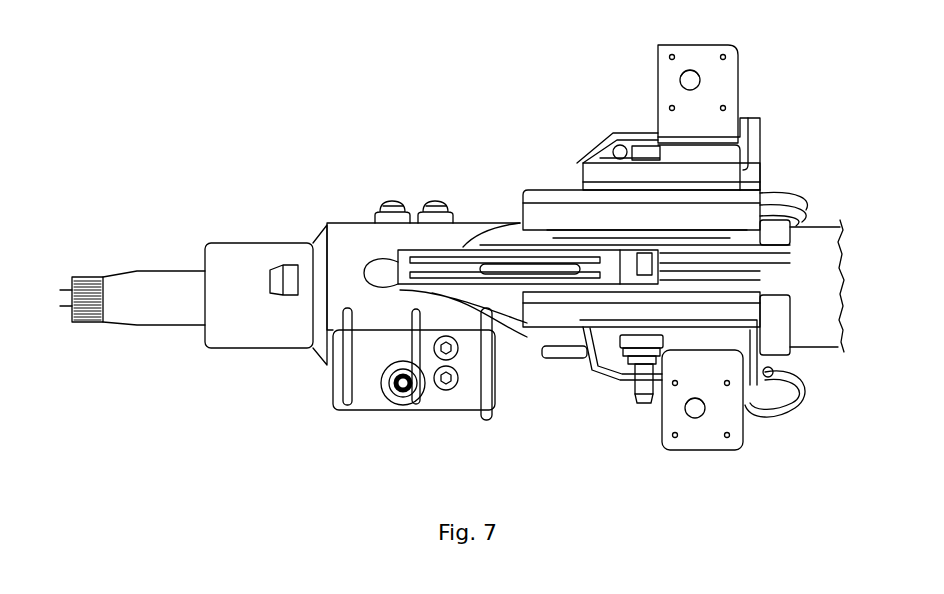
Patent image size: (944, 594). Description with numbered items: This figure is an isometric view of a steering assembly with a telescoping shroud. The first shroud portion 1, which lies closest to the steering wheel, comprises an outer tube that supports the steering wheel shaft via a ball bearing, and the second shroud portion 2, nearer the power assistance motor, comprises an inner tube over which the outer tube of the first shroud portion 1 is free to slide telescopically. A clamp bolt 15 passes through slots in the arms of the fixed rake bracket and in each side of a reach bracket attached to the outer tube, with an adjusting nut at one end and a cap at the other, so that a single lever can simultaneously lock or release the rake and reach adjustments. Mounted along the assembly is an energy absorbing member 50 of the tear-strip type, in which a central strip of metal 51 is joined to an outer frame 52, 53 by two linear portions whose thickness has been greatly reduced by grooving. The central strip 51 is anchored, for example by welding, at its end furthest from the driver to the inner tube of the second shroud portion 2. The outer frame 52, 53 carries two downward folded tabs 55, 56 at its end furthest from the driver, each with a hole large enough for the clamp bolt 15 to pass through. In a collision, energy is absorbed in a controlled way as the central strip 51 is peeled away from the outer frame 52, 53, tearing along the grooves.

The first shroud portion 1 is at (338, 227).
The second shroud portion 2 is at (817, 347).
The clamp bolt 15 is at (727, 250).
The energy absorbing member 50 is at (432, 207).
The central strip of metal 51 is at (527, 267).
The outer frame 52 is at (468, 228).
The outer frame 53 is at (432, 290).
The downward folded tab 55 is at (670, 298).
The downward folded tab 56 is at (643, 243).